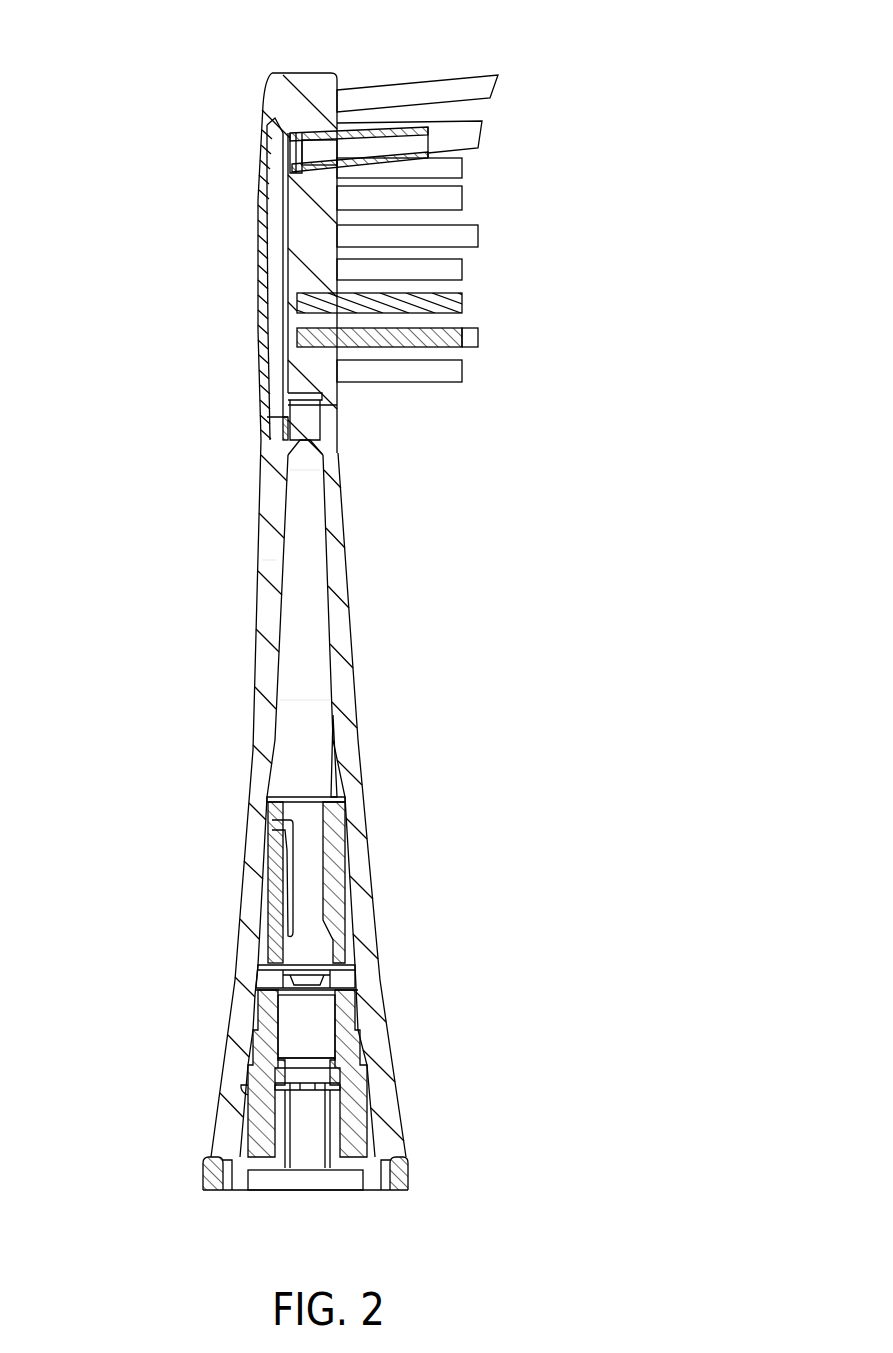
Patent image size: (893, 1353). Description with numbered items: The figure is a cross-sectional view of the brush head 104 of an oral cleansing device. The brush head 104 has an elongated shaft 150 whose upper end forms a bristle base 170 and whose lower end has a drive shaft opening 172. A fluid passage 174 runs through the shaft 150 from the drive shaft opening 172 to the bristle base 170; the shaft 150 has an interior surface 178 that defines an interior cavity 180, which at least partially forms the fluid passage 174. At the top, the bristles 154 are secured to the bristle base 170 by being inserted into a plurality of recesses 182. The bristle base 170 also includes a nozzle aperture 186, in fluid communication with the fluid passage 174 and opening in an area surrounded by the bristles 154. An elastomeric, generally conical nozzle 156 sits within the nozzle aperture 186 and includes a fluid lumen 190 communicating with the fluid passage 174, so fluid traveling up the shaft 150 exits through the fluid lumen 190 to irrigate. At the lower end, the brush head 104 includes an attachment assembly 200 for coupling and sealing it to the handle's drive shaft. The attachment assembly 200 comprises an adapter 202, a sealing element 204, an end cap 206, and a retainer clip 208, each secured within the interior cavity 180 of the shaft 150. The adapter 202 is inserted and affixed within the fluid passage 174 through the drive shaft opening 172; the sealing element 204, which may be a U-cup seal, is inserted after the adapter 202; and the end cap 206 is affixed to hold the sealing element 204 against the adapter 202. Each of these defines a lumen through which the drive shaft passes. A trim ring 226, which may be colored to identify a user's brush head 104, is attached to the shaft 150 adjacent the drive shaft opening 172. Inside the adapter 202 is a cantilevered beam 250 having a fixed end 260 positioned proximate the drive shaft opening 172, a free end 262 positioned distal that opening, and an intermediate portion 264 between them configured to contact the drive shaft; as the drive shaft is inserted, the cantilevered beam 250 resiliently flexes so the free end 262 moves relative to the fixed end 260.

The brush head 104 is at (163, 486).
The shaft 150 is at (266, 718).
The bristles 154 is at (462, 335).
The nozzle 156 is at (390, 135).
The bristle base 170 is at (285, 86).
The drive shaft opening 172 is at (236, 1206).
The fluid passage 174 is at (302, 701).
The interior surface 178 is at (290, 593).
The interior cavity 180 is at (305, 546).
The recesses 182 is at (322, 354).
The nozzle aperture 186 is at (280, 147).
The fluid lumen 190 is at (398, 144).
The attachment assembly 200 is at (369, 1219).
The adapter 202 is at (338, 863).
The sealing element 204 is at (338, 982).
The end cap 206 is at (350, 1050).
The retainer clip 208 is at (243, 1090).
The trim ring 226 is at (410, 1172).
The cantilevered beam 250 is at (283, 874).
The fixed end 260 is at (273, 946).
The free end 262 is at (276, 838).
The intermediate portion 264 is at (282, 889).